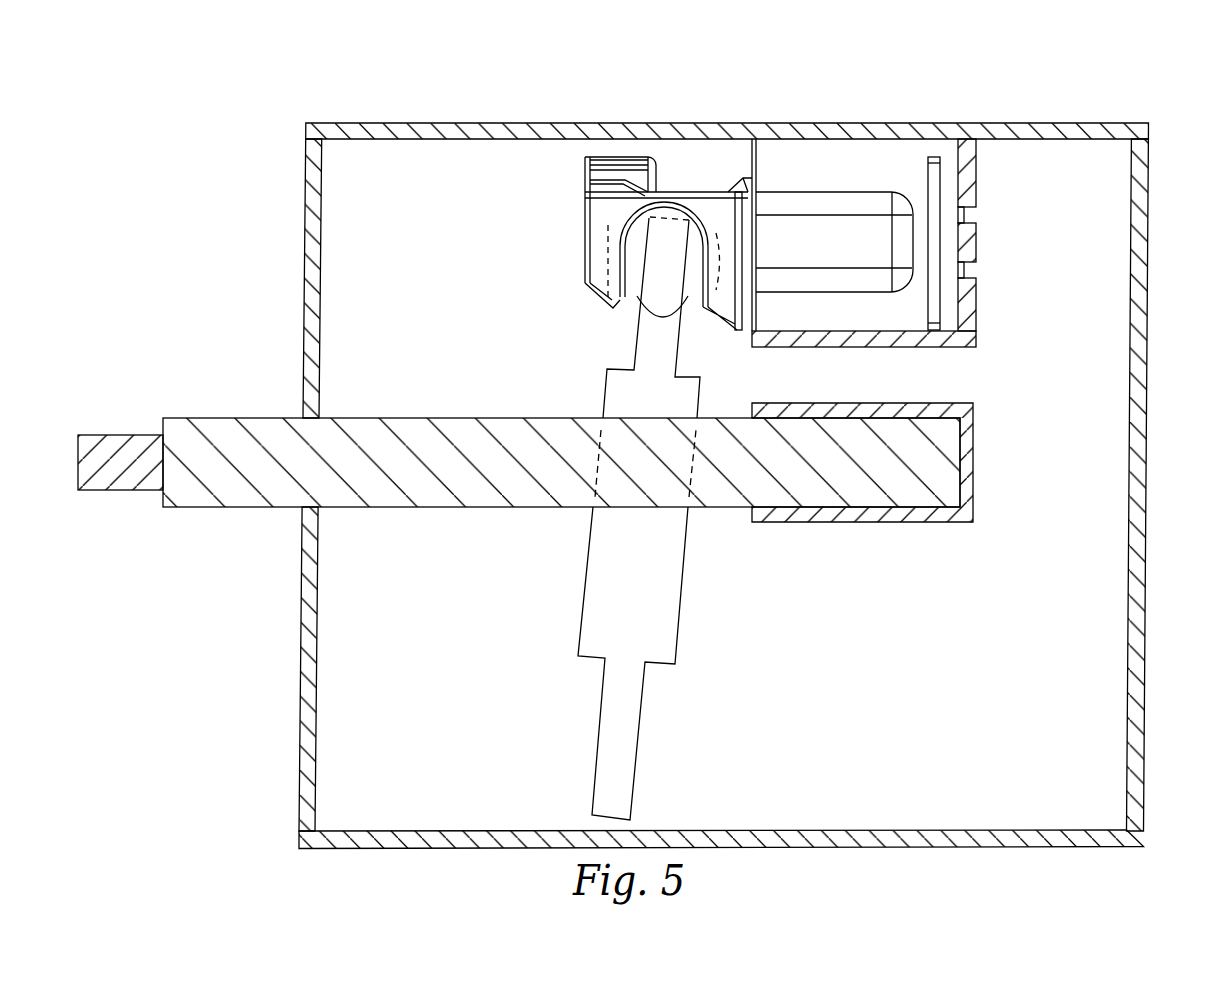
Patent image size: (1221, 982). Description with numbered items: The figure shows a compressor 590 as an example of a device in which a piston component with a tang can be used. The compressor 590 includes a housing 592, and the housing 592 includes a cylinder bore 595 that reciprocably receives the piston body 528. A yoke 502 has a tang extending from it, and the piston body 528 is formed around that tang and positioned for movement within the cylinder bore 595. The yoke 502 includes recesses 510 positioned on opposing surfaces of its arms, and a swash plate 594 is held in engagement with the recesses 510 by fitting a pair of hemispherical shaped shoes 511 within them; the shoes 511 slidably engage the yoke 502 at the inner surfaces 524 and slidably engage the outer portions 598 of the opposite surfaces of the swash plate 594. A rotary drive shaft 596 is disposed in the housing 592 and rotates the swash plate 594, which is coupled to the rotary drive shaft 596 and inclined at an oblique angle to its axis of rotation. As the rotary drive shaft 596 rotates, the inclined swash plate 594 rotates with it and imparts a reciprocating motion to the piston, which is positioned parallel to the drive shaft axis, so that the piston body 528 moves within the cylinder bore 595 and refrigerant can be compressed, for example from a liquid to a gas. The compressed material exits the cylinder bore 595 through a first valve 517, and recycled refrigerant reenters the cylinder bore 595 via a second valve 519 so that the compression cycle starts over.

The compressor 590 is at (265, 60).
The yoke 502 is at (668, 160).
The recesses 510 is at (755, 165).
The shoes 511 is at (742, 228).
The inner surfaces 524 is at (735, 284).
The cylinder bore 595 is at (910, 142).
The first valve 517 is at (976, 215).
The second valve 519 is at (976, 271).
The piston body 528 is at (913, 303).
The housing 592 is at (1105, 430).
The outer portions 598 is at (632, 305).
The swash plate 594 is at (605, 387).
The rotary drive shaft 596 is at (501, 507).